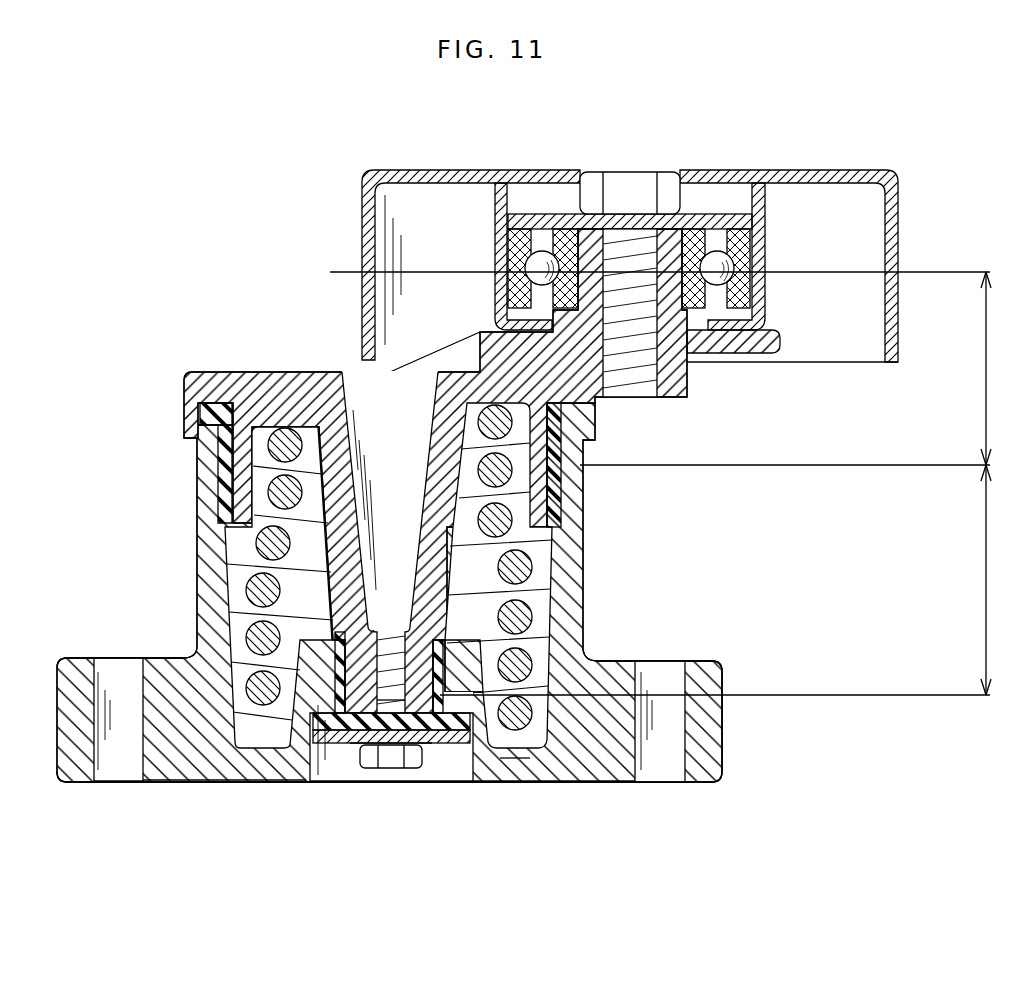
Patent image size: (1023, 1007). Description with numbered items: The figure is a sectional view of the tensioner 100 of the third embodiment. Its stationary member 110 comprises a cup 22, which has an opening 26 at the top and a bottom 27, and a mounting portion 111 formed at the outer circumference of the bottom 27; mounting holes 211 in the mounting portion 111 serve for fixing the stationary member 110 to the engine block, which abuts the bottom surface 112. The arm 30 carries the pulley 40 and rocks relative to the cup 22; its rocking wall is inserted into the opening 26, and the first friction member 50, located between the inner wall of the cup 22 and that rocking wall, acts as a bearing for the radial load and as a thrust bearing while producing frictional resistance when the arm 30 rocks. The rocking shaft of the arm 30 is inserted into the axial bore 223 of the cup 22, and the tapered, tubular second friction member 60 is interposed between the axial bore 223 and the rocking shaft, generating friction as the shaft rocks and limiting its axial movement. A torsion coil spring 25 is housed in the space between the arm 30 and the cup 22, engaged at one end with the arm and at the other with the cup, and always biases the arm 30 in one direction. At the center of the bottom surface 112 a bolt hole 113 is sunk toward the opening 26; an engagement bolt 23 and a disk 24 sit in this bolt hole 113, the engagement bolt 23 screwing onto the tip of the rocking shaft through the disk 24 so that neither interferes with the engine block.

The tensioner 100 is at (95, 318).
The arm 30 is at (238, 368).
The pulley 40 is at (865, 162).
The first friction member 50 is at (212, 468).
The opening 26 is at (590, 436).
The torsion coil spring 25 is at (552, 548).
The cup 22 is at (600, 602).
The mounting holes 211 is at (108, 762).
The bottom surface 112 is at (180, 762).
The second friction member 60 is at (285, 744).
The disk 24 is at (338, 760).
The engagement bolt 23 is at (388, 772).
The axial bore 223 is at (432, 745).
The bolt hole 113 is at (456, 762).
The bottom 27 is at (512, 765).
The mounting portion 111 is at (550, 762).
The stationary member 110 is at (745, 762).